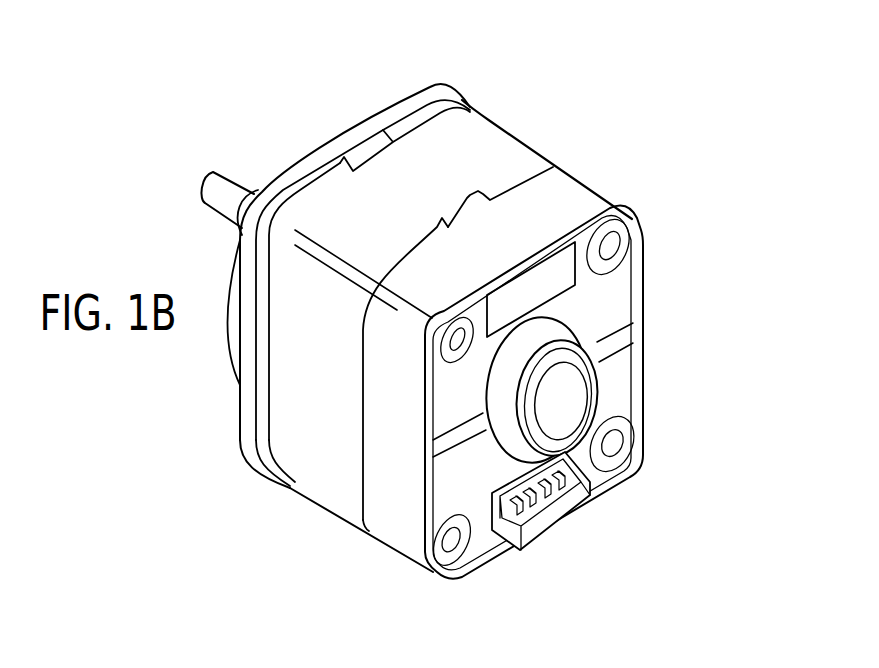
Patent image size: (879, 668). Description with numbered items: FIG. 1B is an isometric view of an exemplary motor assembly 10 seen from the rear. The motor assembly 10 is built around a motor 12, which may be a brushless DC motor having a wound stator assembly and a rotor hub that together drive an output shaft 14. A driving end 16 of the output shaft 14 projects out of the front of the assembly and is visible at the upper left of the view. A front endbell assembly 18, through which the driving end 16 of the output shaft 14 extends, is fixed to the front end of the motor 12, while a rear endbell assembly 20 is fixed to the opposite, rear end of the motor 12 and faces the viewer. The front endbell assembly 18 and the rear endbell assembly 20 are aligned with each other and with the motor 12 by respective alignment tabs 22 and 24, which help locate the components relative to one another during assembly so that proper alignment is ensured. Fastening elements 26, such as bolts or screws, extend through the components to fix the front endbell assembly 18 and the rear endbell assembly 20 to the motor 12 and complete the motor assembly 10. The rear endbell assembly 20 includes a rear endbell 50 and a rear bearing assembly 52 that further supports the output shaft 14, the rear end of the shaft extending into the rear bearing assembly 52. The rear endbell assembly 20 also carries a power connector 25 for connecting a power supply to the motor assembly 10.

The motor assembly 10 is at (550, 120).
The motor 12 is at (303, 494).
The output shaft 14 is at (258, 192).
The driving end 16 is at (218, 188).
The front endbell assembly 18 is at (400, 112).
The rear endbell assembly 20 is at (582, 203).
The alignment tab 22 is at (367, 150).
The alignment tab 24 is at (468, 213).
The power connector 25 is at (552, 517).
The fastening elements 26 is at (452, 542).
The rear endbell 50 is at (636, 400).
The rear bearing assembly 52 is at (574, 343).